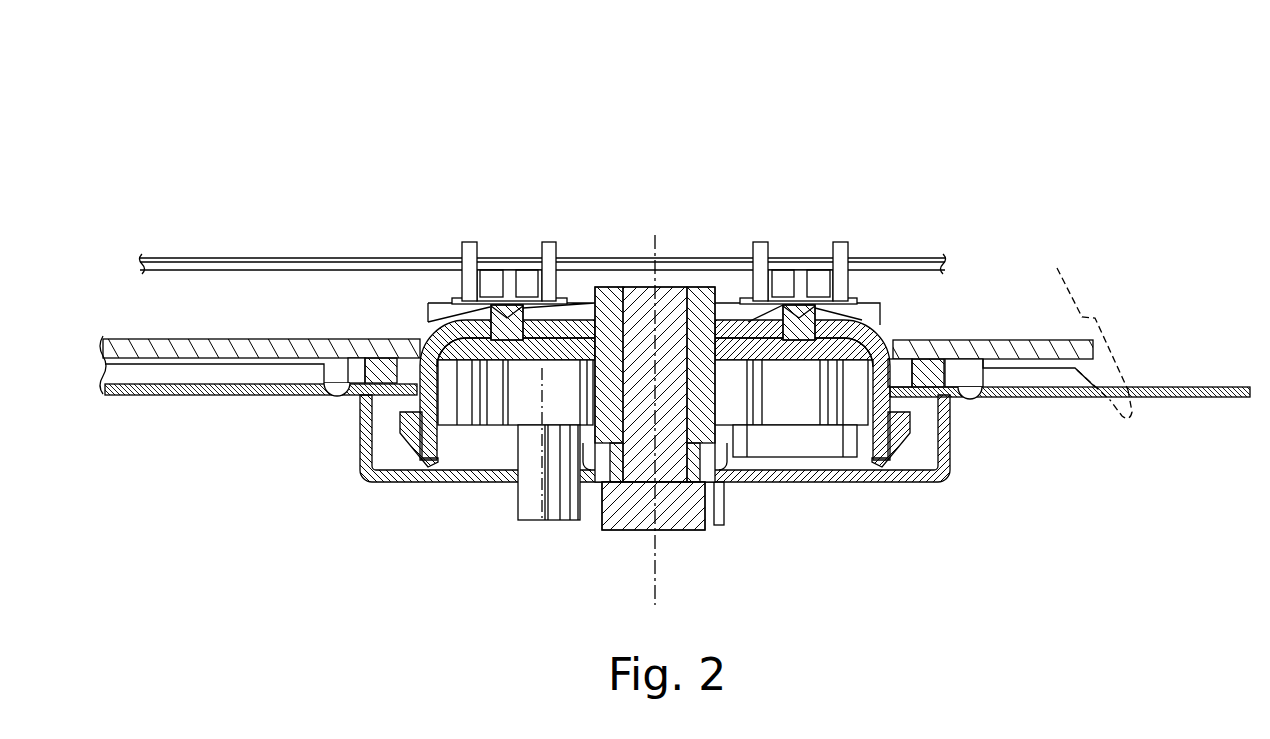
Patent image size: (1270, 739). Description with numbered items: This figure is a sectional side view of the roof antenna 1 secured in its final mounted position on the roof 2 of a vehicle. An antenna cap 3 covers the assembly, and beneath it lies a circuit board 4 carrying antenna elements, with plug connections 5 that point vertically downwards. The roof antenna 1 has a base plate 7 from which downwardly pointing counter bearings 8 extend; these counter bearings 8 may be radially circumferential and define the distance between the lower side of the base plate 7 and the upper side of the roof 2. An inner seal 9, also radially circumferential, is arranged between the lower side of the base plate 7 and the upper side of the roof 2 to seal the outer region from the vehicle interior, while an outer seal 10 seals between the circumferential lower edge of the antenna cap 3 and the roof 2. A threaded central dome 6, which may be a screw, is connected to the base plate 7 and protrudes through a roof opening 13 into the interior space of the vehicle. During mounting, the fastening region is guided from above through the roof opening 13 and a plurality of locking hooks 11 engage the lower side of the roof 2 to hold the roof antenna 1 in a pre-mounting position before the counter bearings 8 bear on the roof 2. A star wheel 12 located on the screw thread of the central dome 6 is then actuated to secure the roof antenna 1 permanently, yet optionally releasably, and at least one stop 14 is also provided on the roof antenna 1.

The roof antenna 1 is at (970, 146).
The roof 2 is at (166, 400).
The antenna cap 3 is at (1125, 331).
The circuit board 4 is at (898, 254).
The plug connections 5 is at (484, 238).
The central dome 6 is at (664, 538).
The base plate 7 is at (158, 328).
The counter bearings 8 is at (382, 356).
The inner seal 9 is at (989, 406).
The outer seal 10 is at (1143, 425).
The locking hooks 11 is at (403, 436).
The star wheel 12 is at (469, 496).
The roof opening 13 is at (895, 418).
The stop 14 is at (539, 530).